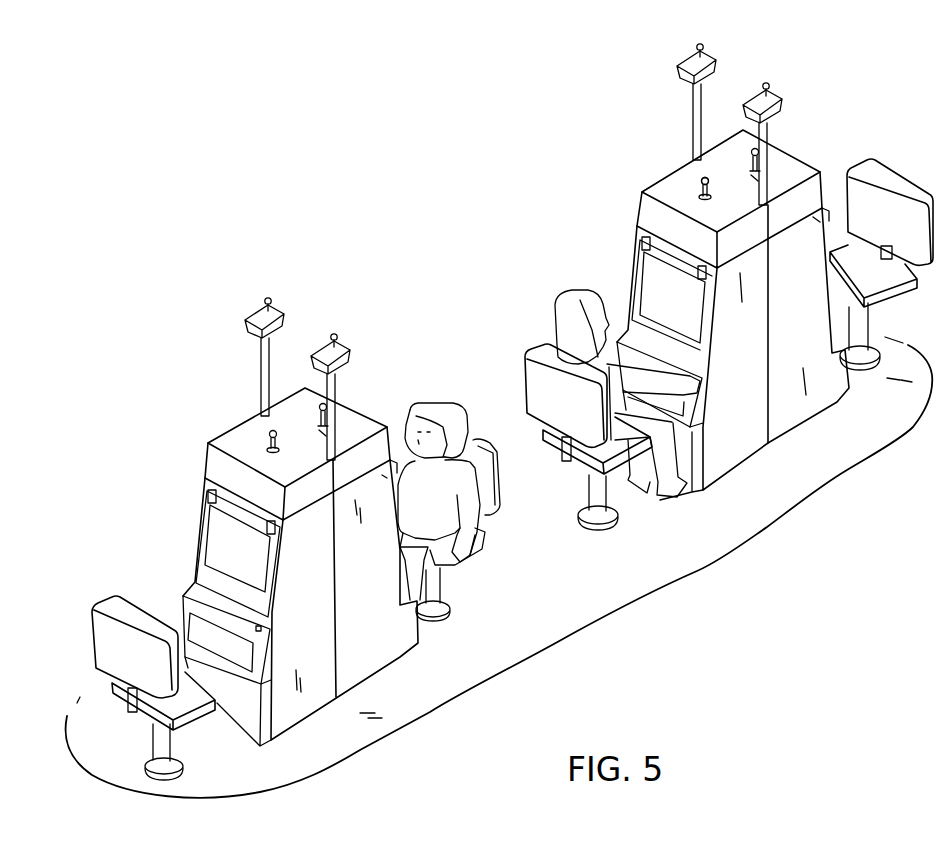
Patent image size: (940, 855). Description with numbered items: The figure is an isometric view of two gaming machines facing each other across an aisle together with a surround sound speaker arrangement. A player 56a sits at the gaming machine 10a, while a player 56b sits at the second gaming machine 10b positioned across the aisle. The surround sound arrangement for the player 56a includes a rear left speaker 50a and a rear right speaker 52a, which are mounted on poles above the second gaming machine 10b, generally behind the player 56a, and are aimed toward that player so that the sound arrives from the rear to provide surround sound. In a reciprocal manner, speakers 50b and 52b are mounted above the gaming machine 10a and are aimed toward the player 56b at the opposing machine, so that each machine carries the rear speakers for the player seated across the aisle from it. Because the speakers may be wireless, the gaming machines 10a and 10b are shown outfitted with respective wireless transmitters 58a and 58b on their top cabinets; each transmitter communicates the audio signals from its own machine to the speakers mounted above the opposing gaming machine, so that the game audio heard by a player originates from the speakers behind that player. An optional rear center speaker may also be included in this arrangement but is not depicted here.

The gaming machine 10a is at (668, 178).
The second gaming machine 10b is at (350, 412).
The rear left speaker 50a is at (281, 300).
The speaker 50b is at (778, 90).
The rear right speaker 52a is at (344, 342).
The speaker 52b is at (714, 53).
The player 56a is at (583, 292).
The player 56b is at (430, 408).
The wireless transmitter 58a is at (703, 178).
The wireless transmitter 58b is at (320, 409).